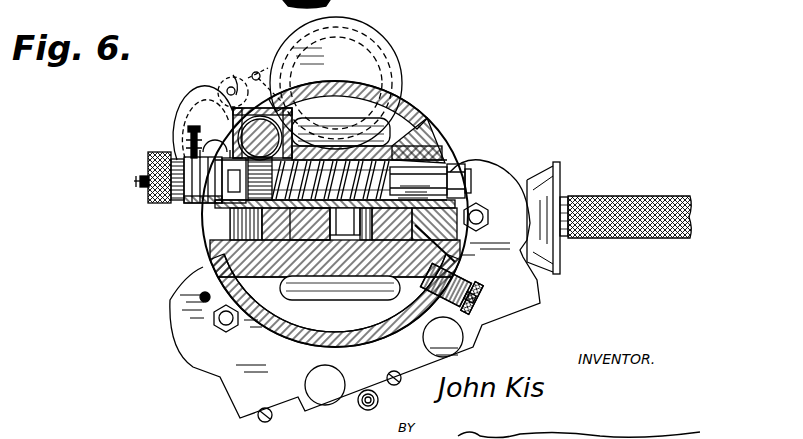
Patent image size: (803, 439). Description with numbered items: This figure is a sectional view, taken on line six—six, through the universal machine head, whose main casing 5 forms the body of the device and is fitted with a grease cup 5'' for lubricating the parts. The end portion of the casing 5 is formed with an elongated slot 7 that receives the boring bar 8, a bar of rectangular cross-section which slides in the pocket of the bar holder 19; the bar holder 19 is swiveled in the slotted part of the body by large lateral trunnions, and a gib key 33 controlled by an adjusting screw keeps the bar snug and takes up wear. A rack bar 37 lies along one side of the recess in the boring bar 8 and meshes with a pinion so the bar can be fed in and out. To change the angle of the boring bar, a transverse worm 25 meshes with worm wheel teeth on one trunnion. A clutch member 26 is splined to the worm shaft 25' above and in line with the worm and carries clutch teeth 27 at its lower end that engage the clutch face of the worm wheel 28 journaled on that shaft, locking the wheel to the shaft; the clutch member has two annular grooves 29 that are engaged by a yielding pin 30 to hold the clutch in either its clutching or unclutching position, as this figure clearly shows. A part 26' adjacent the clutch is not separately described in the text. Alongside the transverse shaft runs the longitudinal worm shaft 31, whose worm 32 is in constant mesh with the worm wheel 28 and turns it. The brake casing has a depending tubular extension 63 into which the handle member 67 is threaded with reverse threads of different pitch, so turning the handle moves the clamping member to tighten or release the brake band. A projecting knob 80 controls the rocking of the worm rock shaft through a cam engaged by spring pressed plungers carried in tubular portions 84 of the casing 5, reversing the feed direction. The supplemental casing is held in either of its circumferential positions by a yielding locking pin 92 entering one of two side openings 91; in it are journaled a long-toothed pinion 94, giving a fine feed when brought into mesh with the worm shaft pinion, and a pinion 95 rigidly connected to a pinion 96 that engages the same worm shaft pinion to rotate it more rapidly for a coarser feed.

The main casing 5 is at (333, 214).
The grease cup 5'' is at (461, 288).
The elongated slot 7 is at (380, 240).
The boring bar member 8 is at (310, 238).
The bar holder 19 is at (393, 230).
The transverse worm 25 is at (343, 140).
The worm shaft 25' is at (425, 135).
The clutch member 26 is at (141, 182).
The knob pin 26' is at (113, 189).
The clutch teeth 27 is at (214, 205).
The worm wheel 28 is at (250, 206).
The annular grooves 29 is at (200, 185).
The yielding pin 30 is at (190, 130).
The longitudinal worm shaft 31 is at (277, 135).
The worm 32 is at (268, 108).
The gib key 33 is at (282, 214).
The rack bar 37 is at (342, 238).
The tubular extension 63 is at (543, 210).
The handle member 67 is at (660, 200).
The knob 80 is at (361, 411).
The tubular portions 84 is at (328, 373).
The side openings 91 is at (226, 90).
The locking pin 92 is at (232, 78).
The pinion 94 is at (213, 112).
The pinion 95 is at (393, 50).
The pinion 96 is at (367, 33).